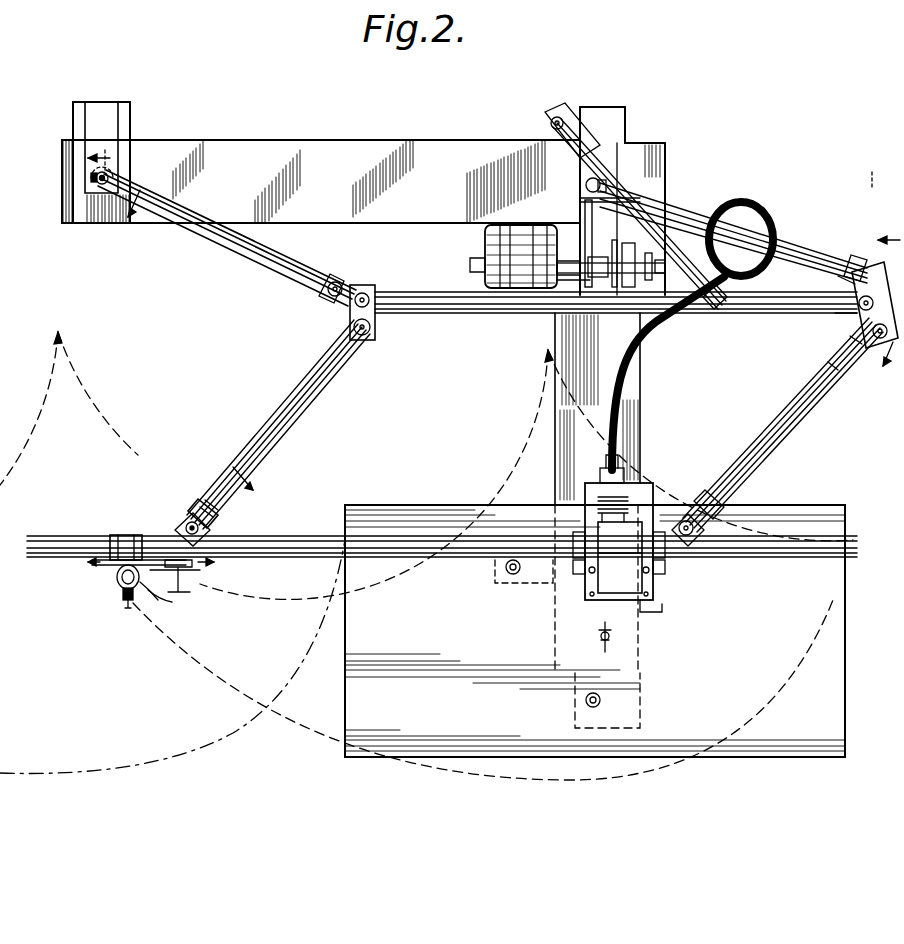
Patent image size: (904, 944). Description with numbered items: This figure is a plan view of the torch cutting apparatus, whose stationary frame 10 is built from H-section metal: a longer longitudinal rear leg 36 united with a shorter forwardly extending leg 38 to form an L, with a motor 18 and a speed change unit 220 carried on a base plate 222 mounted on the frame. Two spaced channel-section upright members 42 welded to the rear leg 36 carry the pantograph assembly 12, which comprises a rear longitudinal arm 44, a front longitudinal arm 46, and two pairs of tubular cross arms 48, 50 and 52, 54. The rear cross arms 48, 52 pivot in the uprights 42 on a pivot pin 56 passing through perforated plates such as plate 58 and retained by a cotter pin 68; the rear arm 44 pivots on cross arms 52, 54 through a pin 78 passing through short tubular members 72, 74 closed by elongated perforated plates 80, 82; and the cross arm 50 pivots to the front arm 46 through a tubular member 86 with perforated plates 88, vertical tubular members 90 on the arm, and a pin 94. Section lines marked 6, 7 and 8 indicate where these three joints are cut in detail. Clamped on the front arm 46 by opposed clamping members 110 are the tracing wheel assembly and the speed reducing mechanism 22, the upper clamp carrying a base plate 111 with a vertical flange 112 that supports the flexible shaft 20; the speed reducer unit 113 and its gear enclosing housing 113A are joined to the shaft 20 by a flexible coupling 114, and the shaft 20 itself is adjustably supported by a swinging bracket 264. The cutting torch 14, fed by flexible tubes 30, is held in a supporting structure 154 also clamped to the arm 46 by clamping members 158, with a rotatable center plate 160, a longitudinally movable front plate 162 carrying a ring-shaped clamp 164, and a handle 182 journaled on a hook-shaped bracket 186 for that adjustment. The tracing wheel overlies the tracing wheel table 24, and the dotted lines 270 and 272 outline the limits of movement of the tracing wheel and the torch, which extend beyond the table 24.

The L-shaped frame 10 is at (444, 140).
The pantograph assembly 12 is at (300, 298).
The metal cutting torch 14 is at (121, 592).
The electric motor 18 is at (483, 247).
The flexible shaft 20 is at (775, 218).
The speed reducing mechanism 22 is at (606, 600).
The tracing wheel table 24 is at (838, 712).
The flexible tubes 30 is at (142, 598).
The longitudinal rear leg 36 is at (215, 148).
The forwardly extending leg 38 is at (645, 431).
The upright members 42 is at (110, 104).
The rear longitudinal arm 44 is at (466, 312).
The front longitudinal arm 46 is at (306, 534).
The cross arm 48 is at (262, 262).
The cross arm 50 is at (300, 388).
The cross arm 52 is at (806, 242).
The cross arm 54 is at (836, 388).
The pivot pin 56 is at (100, 185).
The perforated plate 58 is at (97, 104).
The cotter pin 68 is at (96, 180).
The tubular member 72 is at (850, 341).
The tubular member 74 is at (846, 281).
The pivot pin 78 is at (832, 315).
The perforated plate 80 is at (868, 272).
The perforated plate 82 is at (830, 367).
The tubular member 86 is at (210, 496).
The perforated plates 88 is at (194, 508).
The tubular members 90 is at (204, 529).
The pin 94 is at (182, 526).
The clamping members 110 is at (600, 556).
The base plate 111 is at (646, 613).
The vertical flange 112 is at (640, 483).
The speed reducer unit 113 is at (598, 526).
The gear enclosing housing 113A is at (612, 570).
The flexible coupling 114 is at (626, 500).
The supporting structure 154 is at (92, 562).
The clamping members 158 is at (118, 536).
The center plate 160 is at (117, 578).
The front plate 162 is at (166, 598).
The ring-shaped clamp 164 is at (122, 598).
The handle 182 is at (193, 593).
The hook-shaped bracket 186 is at (202, 572).
The speed change unit 220 is at (577, 216).
The base plate 222 is at (520, 150).
The swinging bracket 264 is at (600, 160).
The dotted line 270 is at (297, 745).
The dotted line 272 is at (225, 746).
The section line 6 is at (879, 280).
The section line 7 is at (180, 527).
The section line 8 is at (123, 181).